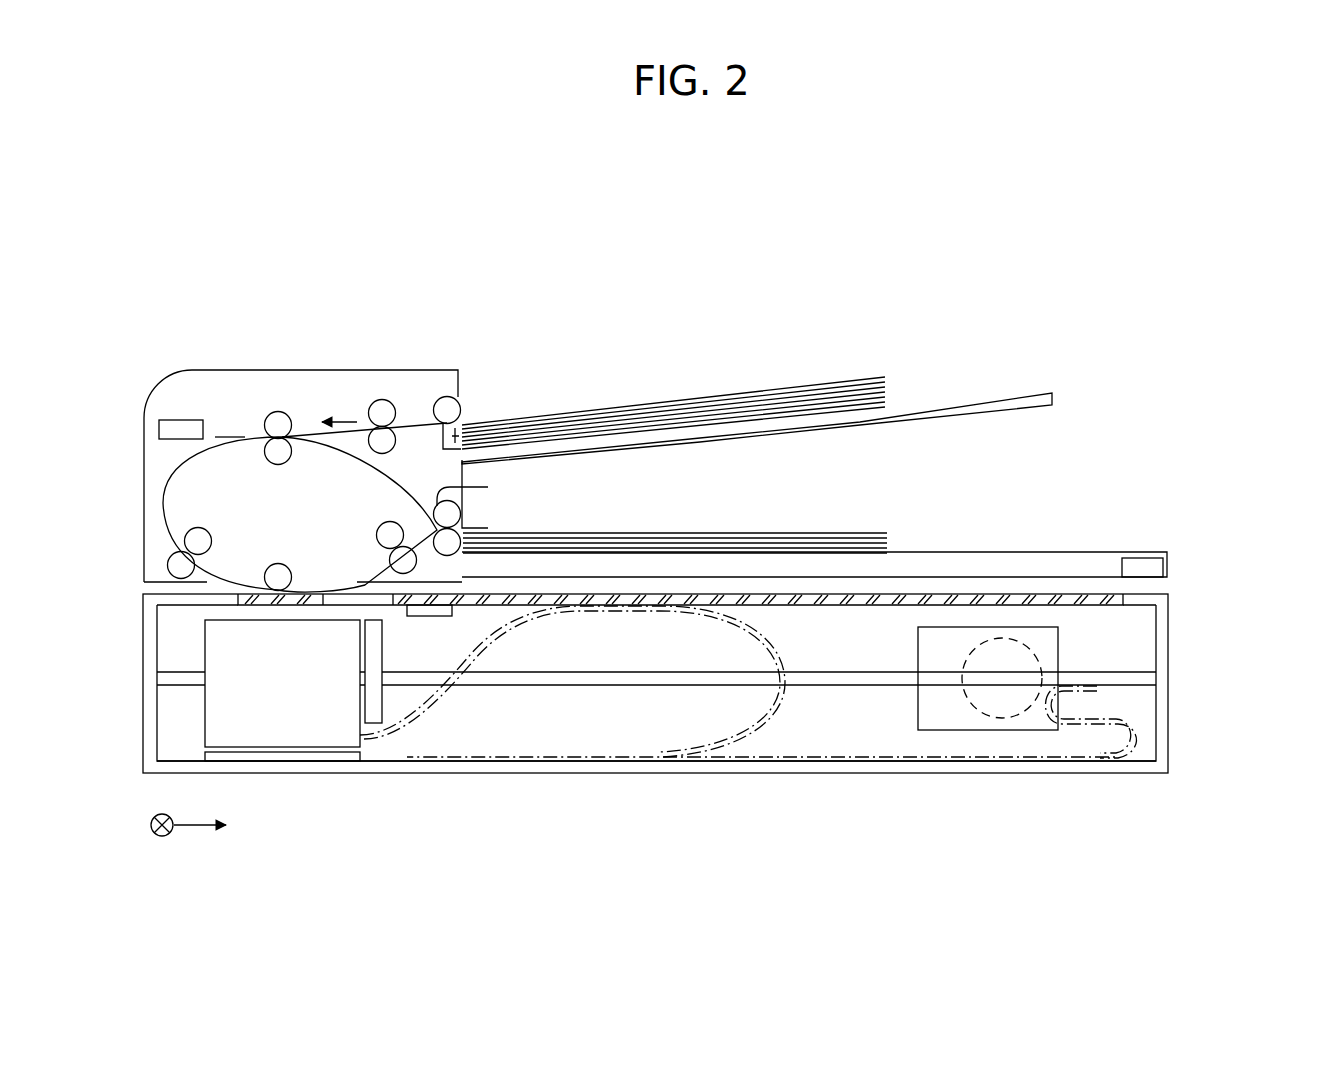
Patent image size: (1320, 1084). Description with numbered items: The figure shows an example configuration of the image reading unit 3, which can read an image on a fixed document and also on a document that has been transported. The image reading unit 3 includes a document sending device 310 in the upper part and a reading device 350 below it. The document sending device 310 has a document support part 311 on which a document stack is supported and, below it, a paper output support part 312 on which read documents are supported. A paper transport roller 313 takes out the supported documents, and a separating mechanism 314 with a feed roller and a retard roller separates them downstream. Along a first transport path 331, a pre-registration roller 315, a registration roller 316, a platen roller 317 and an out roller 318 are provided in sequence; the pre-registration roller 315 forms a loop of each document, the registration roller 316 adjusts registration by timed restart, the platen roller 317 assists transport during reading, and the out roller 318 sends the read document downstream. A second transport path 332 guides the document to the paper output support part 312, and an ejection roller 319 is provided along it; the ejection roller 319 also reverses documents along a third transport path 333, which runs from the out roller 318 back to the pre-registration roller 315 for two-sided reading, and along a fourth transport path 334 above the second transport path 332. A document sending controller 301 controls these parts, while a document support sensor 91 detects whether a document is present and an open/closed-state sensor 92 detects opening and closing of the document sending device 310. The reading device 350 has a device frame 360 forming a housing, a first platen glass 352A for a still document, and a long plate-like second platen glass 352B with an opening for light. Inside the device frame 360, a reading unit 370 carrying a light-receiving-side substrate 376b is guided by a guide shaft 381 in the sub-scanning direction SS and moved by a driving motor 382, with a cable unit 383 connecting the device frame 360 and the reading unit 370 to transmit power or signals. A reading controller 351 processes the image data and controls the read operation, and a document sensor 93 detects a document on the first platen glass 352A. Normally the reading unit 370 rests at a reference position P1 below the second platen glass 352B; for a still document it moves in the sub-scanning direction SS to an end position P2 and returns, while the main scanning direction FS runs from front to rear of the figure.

The image reading unit 3 is at (806, 257).
The document sending controller 301 is at (178, 420).
The first transport path 331 is at (222, 438).
The third transport path 333 is at (338, 457).
The fourth transport path 334 is at (436, 497).
The pre-registration roller 315 is at (276, 411).
The separating mechanism 314 is at (372, 394).
The paper transport roller 313 is at (444, 397).
The registration roller 316 is at (180, 540).
The platen roller 317 is at (277, 567).
The out roller 318 is at (380, 532).
The ejection roller 319 is at (458, 513).
The document support sensor 91 is at (459, 428).
The open/closed-state sensor 92 is at (1142, 558).
The document sensor 93 is at (428, 617).
The document sending device 310 is at (640, 360).
The document support part 311 is at (853, 424).
The paper output support part 312 is at (985, 552).
The second transport path 332 is at (482, 528).
The reading device 350 is at (1207, 690).
The first platen glass 352A is at (1063, 605).
The second platen glass 352B is at (240, 607).
The reading unit 370 is at (205, 713).
The light-receiving-side substrate 376b is at (376, 724).
The guide shaft 381 is at (835, 688).
The driving motor 382 is at (1003, 720).
The cable unit 383 is at (740, 760).
The reading controller 351 is at (318, 762).
The device frame 360 is at (600, 774).
The reference position P1 is at (401, 751).
The end position P2 is at (1104, 749).
The main scanning direction FS is at (162, 842).
The sub-scanning direction SS is at (219, 824).